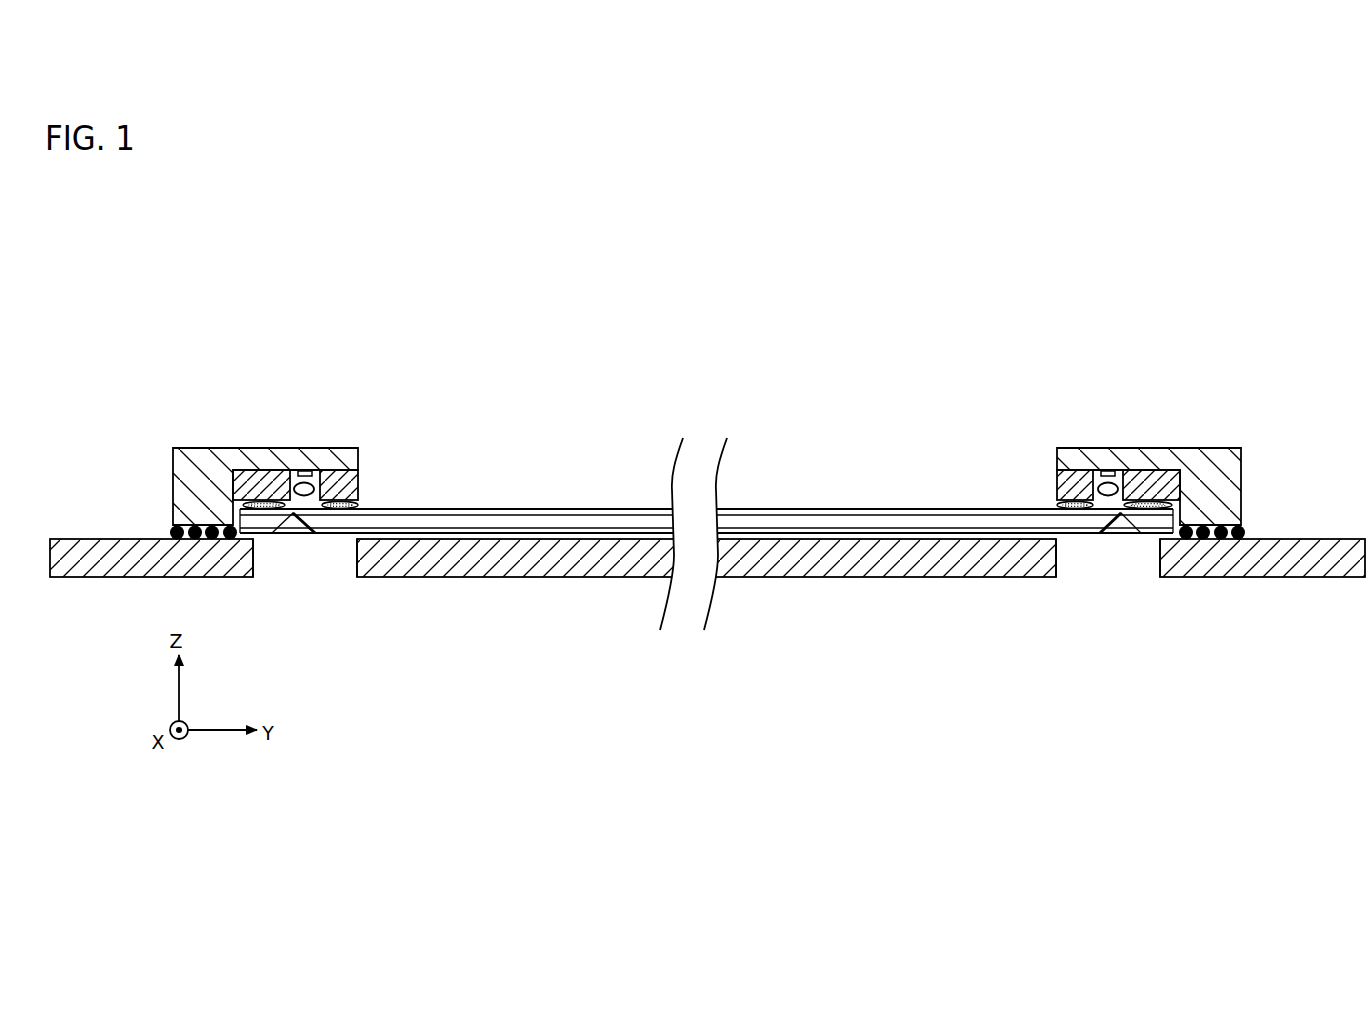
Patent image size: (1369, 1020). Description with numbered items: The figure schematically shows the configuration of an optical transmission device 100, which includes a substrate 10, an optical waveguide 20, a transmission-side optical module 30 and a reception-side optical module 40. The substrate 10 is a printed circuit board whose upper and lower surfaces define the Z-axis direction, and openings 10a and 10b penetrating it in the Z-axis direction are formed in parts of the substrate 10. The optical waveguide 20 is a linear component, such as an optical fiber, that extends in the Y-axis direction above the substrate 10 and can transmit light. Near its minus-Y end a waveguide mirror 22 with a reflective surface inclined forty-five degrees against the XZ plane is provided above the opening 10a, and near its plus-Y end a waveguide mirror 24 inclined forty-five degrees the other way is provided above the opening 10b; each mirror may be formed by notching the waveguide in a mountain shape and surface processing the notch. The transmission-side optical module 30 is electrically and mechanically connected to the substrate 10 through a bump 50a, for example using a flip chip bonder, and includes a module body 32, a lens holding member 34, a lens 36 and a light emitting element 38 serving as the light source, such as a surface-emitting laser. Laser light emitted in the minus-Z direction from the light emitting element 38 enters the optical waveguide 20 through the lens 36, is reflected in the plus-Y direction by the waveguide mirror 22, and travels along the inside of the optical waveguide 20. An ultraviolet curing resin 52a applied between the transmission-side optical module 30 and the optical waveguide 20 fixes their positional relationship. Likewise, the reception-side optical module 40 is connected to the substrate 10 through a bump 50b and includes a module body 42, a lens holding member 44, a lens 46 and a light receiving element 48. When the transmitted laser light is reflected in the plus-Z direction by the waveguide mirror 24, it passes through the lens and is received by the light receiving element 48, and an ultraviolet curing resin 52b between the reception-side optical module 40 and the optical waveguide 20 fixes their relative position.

The optical transmission device 100 is at (818, 358).
The substrate 10 is at (893, 577).
The opening 10a is at (357, 557).
The opening 10b is at (1059, 557).
The optical waveguide 20 is at (801, 508).
The waveguide mirror 22 is at (299, 520).
The waveguide mirror 24 is at (1112, 517).
The transmission-side optical module 30 is at (202, 422).
The module body 32 is at (187, 448).
The lens holding member 34 is at (358, 474).
The lens 36 is at (291, 478).
The light emitting element 38 is at (302, 470).
The reception-side optical module 40 is at (1212, 422).
The module body 42 is at (1227, 448).
The lens holding member 44 is at (1056, 477).
The lens 46 is at (1123, 477).
The light receiving element 48 is at (1108, 471).
The bump 50a is at (172, 532).
The bump 50b is at (1243, 532).
The ultraviolet curing resin 52a is at (358, 503).
The ultraviolet curing resin 52b is at (1057, 504).